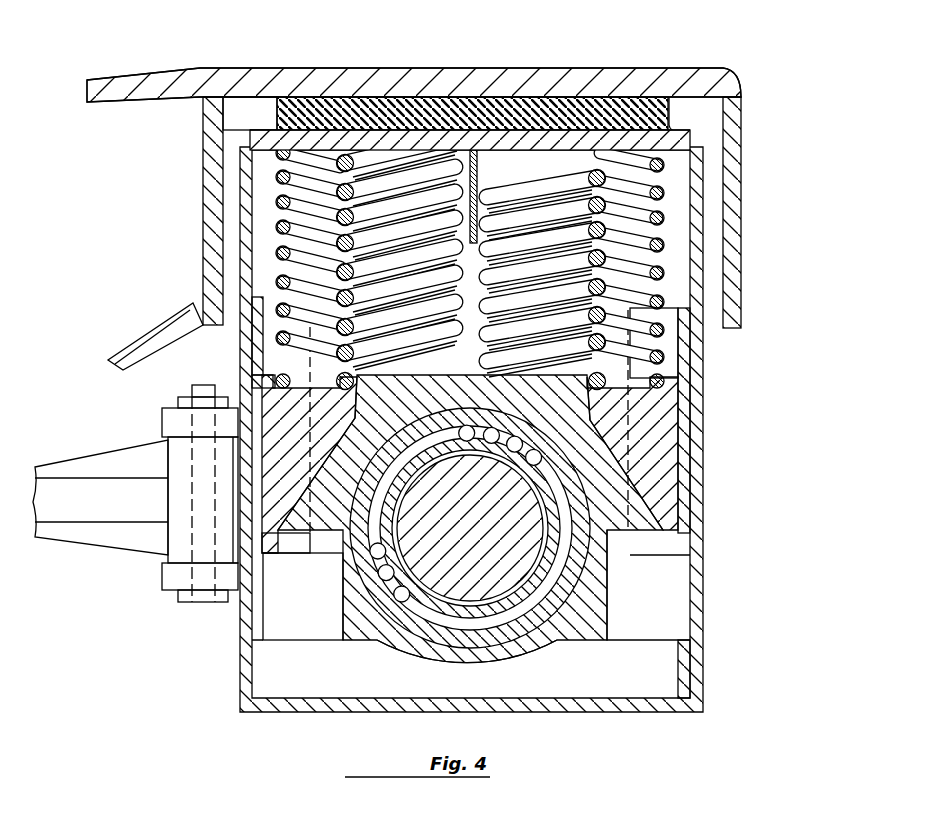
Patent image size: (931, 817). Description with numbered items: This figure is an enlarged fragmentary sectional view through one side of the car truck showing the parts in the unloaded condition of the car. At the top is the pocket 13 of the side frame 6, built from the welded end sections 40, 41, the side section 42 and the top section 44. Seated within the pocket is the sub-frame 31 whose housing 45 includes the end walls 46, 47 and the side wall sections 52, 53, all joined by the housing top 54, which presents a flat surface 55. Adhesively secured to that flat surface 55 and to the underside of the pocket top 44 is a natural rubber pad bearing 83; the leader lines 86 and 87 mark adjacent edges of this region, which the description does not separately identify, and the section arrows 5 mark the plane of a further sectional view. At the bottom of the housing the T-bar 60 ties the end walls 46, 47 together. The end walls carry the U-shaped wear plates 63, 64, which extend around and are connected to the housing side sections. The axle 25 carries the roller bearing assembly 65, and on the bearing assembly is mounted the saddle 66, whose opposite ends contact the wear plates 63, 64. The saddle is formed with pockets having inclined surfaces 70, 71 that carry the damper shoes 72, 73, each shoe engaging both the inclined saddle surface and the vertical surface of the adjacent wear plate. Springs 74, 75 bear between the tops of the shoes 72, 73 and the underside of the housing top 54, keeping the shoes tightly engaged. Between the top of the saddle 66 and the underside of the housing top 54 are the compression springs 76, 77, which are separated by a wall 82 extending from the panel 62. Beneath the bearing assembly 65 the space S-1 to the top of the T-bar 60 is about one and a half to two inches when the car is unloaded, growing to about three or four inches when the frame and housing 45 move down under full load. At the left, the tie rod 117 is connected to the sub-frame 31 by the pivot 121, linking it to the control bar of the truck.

The section line 5- 5 is at (235, 202).
The side frame 6 is at (447, 78).
The pocket 13 is at (776, 199).
The axle 25 is at (492, 572).
The sub-frame 31 is at (712, 372).
The end section 40 is at (215, 163).
The end section 41 is at (737, 169).
The side section 42 is at (243, 115).
The top section 44 is at (512, 78).
The housing 45 is at (712, 557).
The end wall 46 is at (243, 340).
The end wall 47 is at (697, 402).
The side wall section 52 is at (283, 603).
The side wall section 53 is at (661, 600).
The housing top 54 is at (613, 147).
The flat surface 55 is at (680, 132).
The T-bar 60 is at (596, 683).
The panel 62 is at (492, 262).
The U-shaped wear plate 63 is at (257, 363).
The U-shaped wear plate 64 is at (687, 467).
The roller bearing assembly 65 is at (397, 597).
The saddle 66 is at (405, 380).
The inclined surface 70 is at (275, 535).
The inclined surface 71 is at (655, 497).
The damper shoe 72 is at (287, 444).
The damper shoe 73 is at (650, 442).
The spring 74 is at (280, 228).
The spring 75 is at (665, 346).
The compression spring 76 is at (390, 226).
The compression spring 77 is at (525, 189).
The wall 82 is at (490, 150).
The pad bearing 83 is at (378, 103).
The plate left edge 86 is at (252, 132).
The plate right edge 87 is at (693, 140).
The tie rod 117 is at (80, 492).
The pivot 121 is at (190, 530).
The space S-1 is at (470, 662).